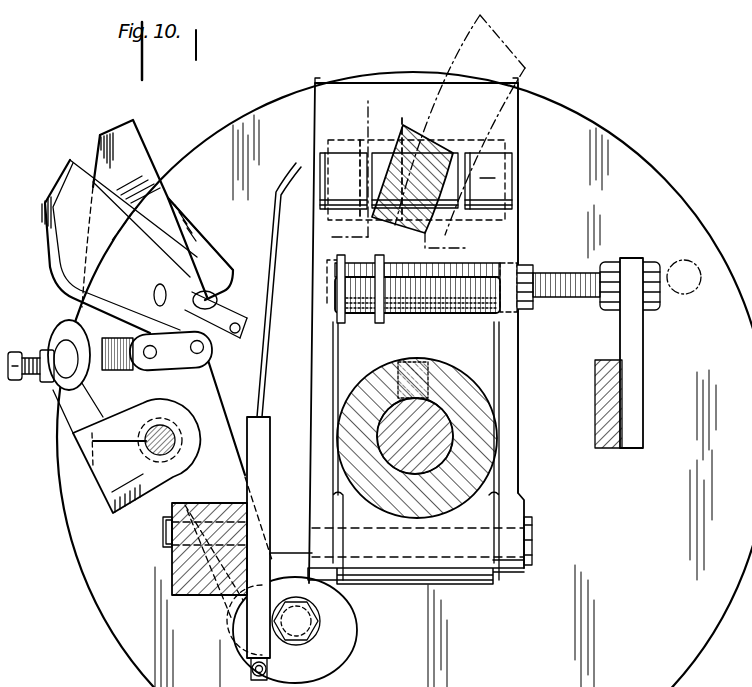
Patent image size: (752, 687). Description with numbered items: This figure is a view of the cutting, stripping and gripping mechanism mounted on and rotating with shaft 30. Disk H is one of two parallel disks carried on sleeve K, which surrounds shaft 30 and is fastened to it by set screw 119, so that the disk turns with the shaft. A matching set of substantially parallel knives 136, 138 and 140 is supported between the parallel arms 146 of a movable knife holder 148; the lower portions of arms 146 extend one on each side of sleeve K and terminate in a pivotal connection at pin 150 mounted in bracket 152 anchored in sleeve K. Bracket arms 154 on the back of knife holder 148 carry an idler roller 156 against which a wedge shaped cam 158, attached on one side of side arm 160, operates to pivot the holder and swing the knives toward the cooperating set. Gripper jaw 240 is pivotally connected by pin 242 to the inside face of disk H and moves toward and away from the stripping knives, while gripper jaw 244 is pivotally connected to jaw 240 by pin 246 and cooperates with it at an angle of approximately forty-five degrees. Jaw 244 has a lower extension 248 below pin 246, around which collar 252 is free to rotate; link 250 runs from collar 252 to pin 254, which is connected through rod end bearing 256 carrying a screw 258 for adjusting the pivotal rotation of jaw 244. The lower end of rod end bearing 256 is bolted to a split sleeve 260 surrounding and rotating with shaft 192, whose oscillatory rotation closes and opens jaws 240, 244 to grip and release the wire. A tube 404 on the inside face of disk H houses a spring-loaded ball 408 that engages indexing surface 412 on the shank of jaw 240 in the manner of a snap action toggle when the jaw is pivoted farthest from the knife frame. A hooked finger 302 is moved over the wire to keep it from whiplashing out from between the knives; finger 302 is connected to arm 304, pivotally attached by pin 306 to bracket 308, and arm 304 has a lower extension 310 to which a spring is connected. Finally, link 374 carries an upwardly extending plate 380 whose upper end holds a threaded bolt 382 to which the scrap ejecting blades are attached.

The gripper jaw 240 is at (112, 136).
The gripper jaw 244 is at (57, 152).
The tube 404 is at (196, 226).
The hooked finger 302 is at (274, 214).
The ball 408 is at (222, 302).
The indexing surface 412 is at (250, 305).
The collar 252 is at (235, 323).
The lower extension 248 is at (243, 335).
The pin 246 is at (160, 284).
The rod end bearing 256 is at (65, 320).
The screw 258 is at (20, 356).
The pin 254 is at (132, 370).
The link 250 is at (184, 368).
The shaft 192 is at (176, 442).
The split sleeve 260 is at (157, 498).
The pin 306 is at (165, 537).
The bracket 308 is at (180, 583).
The lower extension 310 is at (251, 678).
The arm 304 is at (266, 468).
The pin 242 is at (303, 632).
The bracket 152 is at (463, 575).
The pin 150 is at (533, 548).
The movable knife holder 148 is at (520, 365).
The link 374 is at (606, 402).
The plate 380 is at (637, 334).
The threaded bolt 382 is at (480, 319).
The sleeve K is at (383, 372).
The set screw 119 is at (420, 356).
The shaft 30 is at (430, 429).
The knife 136 is at (415, 112).
The knife 138 is at (380, 100).
The knife 140 is at (343, 95).
The wedge shaped cam 158 is at (425, 145).
The bracket arms 154 is at (326, 170).
The idler roller 156 is at (442, 222).
The side arm 160 is at (538, 62).
The parallel arms 146 is at (520, 122).
The disk H is at (650, 590).